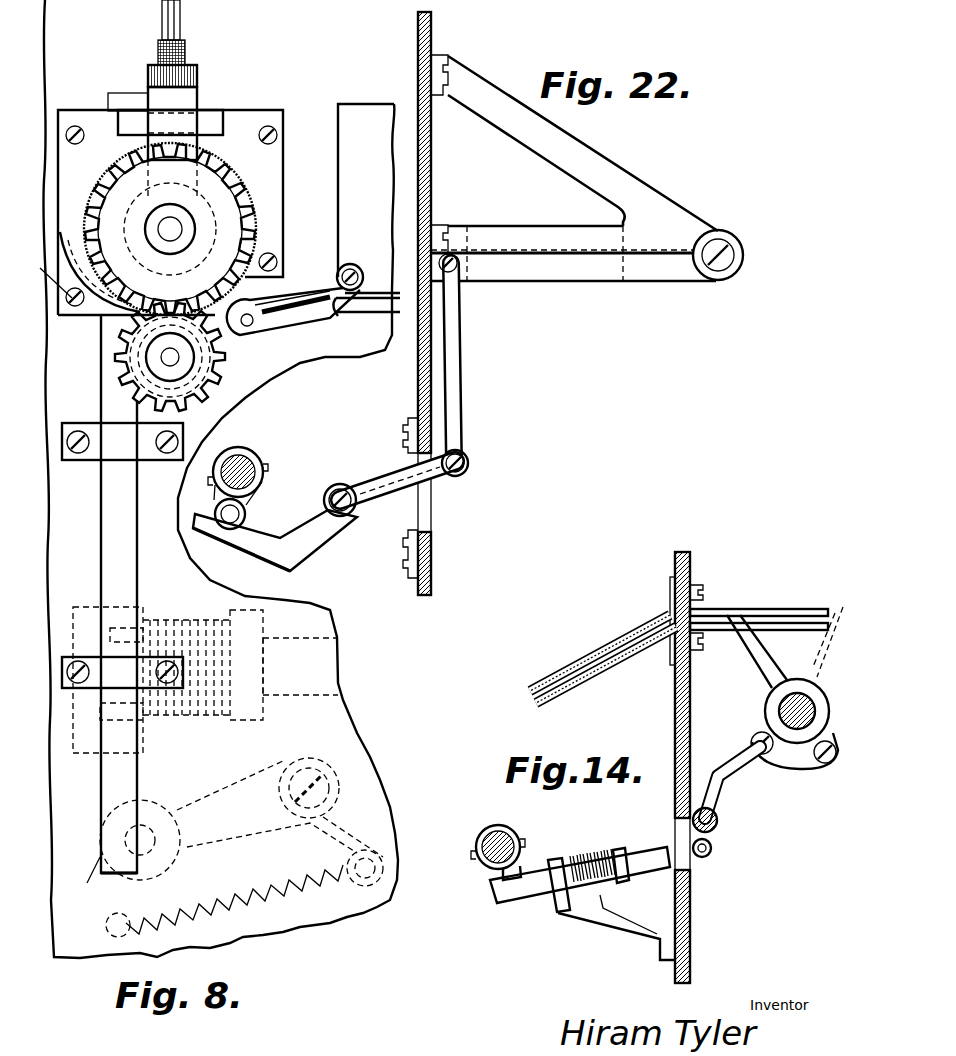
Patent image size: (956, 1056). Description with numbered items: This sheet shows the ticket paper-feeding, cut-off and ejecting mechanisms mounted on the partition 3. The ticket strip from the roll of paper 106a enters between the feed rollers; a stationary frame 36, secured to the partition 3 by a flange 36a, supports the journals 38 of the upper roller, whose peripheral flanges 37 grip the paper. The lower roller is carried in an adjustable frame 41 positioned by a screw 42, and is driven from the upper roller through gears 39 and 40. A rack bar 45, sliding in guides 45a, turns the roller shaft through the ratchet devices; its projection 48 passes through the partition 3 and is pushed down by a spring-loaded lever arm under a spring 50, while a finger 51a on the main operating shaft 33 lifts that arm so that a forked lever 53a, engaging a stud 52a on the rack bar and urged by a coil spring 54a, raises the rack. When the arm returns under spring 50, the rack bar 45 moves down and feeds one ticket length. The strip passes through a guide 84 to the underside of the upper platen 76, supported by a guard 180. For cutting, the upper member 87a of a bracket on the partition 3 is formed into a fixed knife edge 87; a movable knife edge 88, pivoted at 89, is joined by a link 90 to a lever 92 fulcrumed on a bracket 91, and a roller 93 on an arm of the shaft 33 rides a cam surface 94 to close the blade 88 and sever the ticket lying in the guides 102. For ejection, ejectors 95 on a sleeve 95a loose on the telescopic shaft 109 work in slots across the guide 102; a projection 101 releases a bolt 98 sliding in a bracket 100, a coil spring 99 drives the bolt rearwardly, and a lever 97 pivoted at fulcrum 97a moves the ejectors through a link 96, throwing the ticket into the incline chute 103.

In FIG. 8, the partition 3 is at (220, 479).
In FIG. 22, the partition 3 is at (433, 25).
In FIG. 14, the partition 3 is at (673, 712).
In FIG. 8, the main operating shaft 33 is at (305, 704).
In FIG. 22, the main operating shaft 33 is at (248, 458).
In FIG. 14, the main operating shaft 33 is at (492, 830).
In FIG. 8, the stationary frame 36 is at (208, 127).
In FIG. 8, the flange 36a is at (162, 212).
In FIG. 8, the peripheral flanges 37 is at (118, 170).
In FIG. 8, the journals 38 is at (172, 230).
In FIG. 8, the gear 39 is at (220, 243).
In FIG. 8, the gear 40 is at (205, 368).
In FIG. 8, the adjustable frame 41 is at (185, 100).
In FIG. 8, the screw 42 is at (182, 18).
In FIG. 8, the rack bar 45 is at (118, 100).
In FIG. 8, the guides 45a is at (118, 447).
In FIG. 8, the projection 48 is at (74, 228).
In FIG. 8, the spring 50 is at (190, 622).
In FIG. 8, the finger 51a is at (142, 752).
In FIG. 8, the stud 52a is at (126, 857).
In FIG. 8, the lever 53a is at (212, 797).
In FIG. 8, the coil spring 54a is at (226, 893).
In FIG. 8, the upper platen 76 is at (366, 190).
In FIG. 8, the guide 84 is at (299, 293).
In FIG. 22, the knife edge 87 is at (522, 248).
In FIG. 22, the upper member of bracket 87a is at (622, 190).
In FIG. 22, the movable knife edge 88 is at (585, 284).
In FIG. 22, the pivot 89 is at (727, 265).
In FIG. 22, the link 90 is at (460, 398).
In FIG. 22, the bracket 91 is at (379, 470).
In FIG. 22, the lever 92 is at (300, 552).
In FIG. 22, the roller 93 is at (250, 512).
In FIG. 22, the cam surface 94 is at (210, 532).
In FIG. 14, the ejectors 95 is at (758, 664).
In FIG. 14, the sleeve 95a is at (768, 712).
In FIG. 14, the link 96 is at (802, 765).
In FIG. 14, the lever 97 is at (727, 785).
In FIG. 14, the fulcrum 97a is at (712, 842).
In FIG. 14, the bolt 98 is at (636, 857).
In FIG. 14, the coil spring 99 is at (588, 858).
In FIG. 14, the bracket 100 is at (597, 910).
In FIG. 14, the projection 101 is at (530, 852).
In FIG. 14, the guides 102 is at (785, 607).
In FIG. 14, the incline chute 103 is at (586, 660).
In FIG. 8, the roll of paper 106a is at (74, 363).
In FIG. 14, the roll of paper 106a is at (522, 712).
In FIG. 14, the outer telescopic shaft 109 is at (793, 695).
In FIG. 8, the guard 180 is at (373, 315).